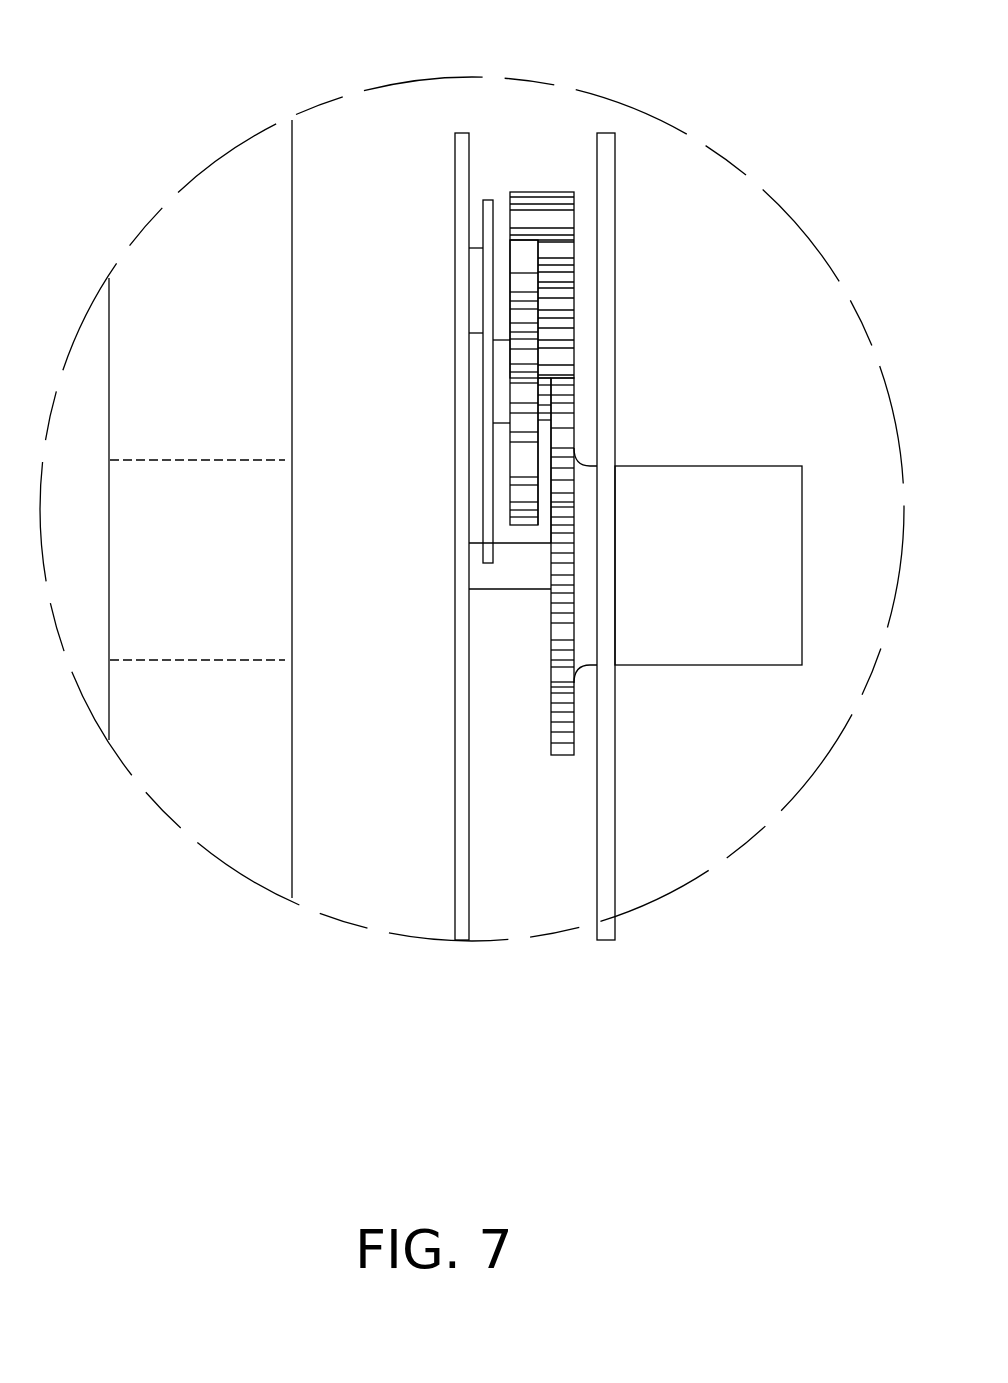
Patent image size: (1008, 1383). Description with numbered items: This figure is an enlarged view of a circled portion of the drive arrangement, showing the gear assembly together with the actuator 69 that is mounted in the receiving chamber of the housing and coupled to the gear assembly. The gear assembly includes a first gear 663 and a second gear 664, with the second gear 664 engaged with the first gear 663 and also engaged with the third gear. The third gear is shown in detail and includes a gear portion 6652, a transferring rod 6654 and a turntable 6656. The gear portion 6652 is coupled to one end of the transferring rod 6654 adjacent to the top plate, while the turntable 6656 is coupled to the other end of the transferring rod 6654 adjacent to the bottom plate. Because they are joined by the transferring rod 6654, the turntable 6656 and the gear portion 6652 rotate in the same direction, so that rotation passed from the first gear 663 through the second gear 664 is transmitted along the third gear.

The actuator 69 is at (477, 262).
The first gear 663 is at (562, 732).
The second gear 664 is at (542, 190).
The gear portion 6652 is at (522, 492).
The transferring rod 6654 is at (500, 363).
The turntable 6656 is at (487, 200).